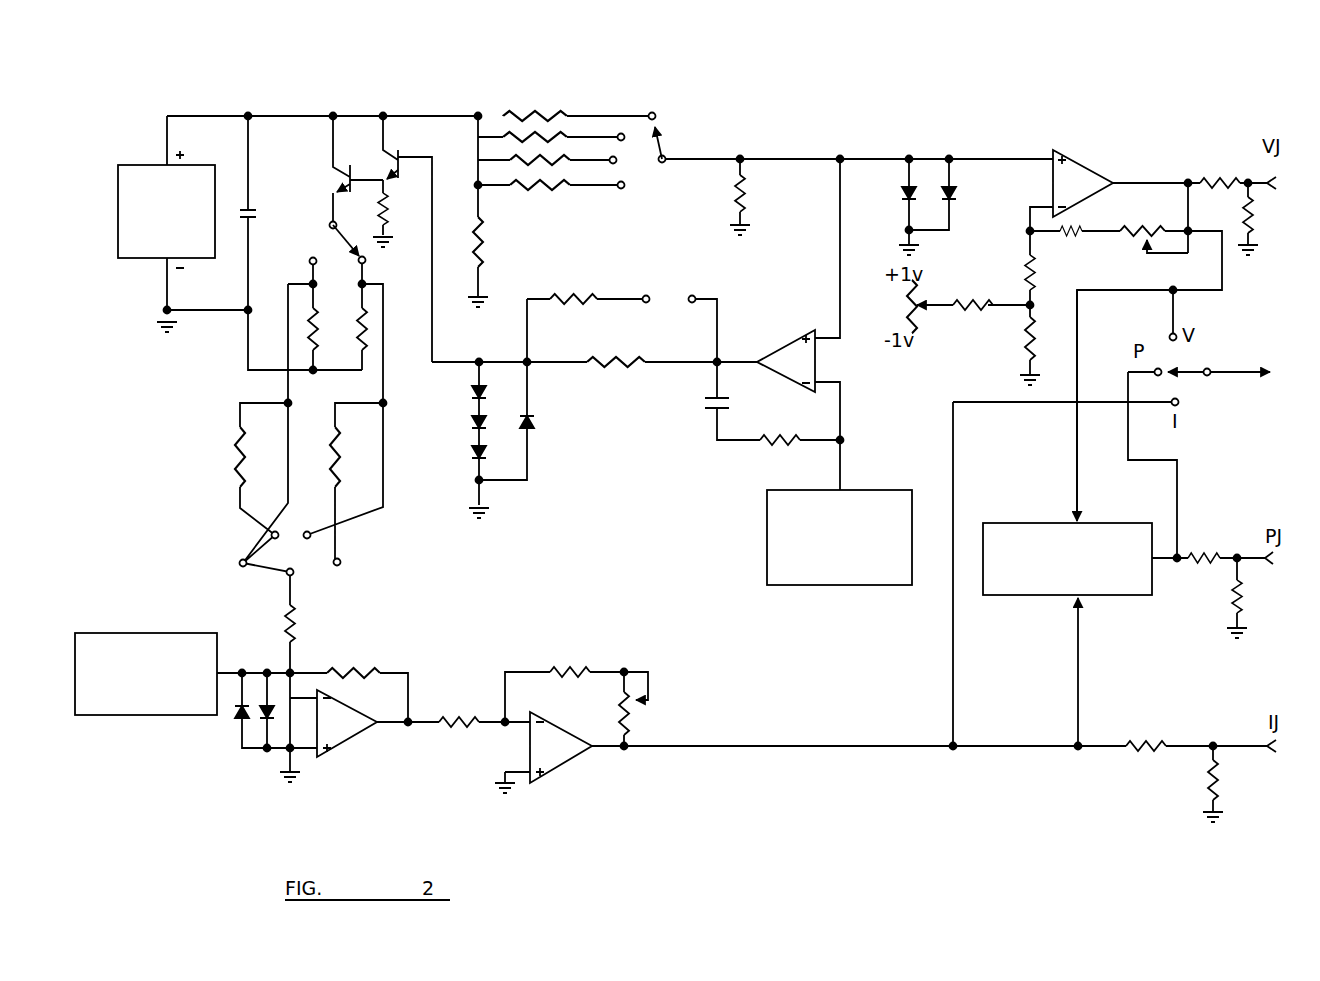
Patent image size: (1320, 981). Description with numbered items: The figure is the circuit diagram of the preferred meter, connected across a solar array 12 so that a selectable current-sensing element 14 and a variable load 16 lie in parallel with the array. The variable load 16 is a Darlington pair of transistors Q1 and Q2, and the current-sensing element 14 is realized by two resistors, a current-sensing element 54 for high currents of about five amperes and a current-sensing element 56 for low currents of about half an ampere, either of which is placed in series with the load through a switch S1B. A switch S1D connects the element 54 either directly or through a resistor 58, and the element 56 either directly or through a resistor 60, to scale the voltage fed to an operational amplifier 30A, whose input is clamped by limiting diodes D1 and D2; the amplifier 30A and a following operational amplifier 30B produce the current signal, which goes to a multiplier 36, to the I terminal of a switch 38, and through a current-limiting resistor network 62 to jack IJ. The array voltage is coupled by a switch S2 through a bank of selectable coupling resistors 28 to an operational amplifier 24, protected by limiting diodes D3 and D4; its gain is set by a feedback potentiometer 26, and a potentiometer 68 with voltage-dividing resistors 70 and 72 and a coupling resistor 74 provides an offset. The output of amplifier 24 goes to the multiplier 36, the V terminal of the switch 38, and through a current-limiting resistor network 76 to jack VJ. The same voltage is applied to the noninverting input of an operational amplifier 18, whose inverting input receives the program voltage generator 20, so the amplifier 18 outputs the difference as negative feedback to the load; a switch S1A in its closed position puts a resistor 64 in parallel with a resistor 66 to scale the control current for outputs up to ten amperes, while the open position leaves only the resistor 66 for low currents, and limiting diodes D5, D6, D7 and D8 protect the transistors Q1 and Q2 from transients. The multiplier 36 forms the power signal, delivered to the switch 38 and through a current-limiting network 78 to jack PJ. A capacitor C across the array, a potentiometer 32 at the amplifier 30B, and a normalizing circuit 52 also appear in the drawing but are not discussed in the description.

The solar array 12 is at (147, 172).
The selectable current-sensing element 14 is at (233, 340).
The variable load 16 is at (352, 104).
The operational amplifier 18 is at (791, 353).
The program voltage generator 20 is at (767, 545).
The operational amplifier 24 is at (1093, 168).
The feedback potentiometer 26 is at (1138, 247).
The bank of selectable coupling resistors 28 is at (532, 100).
The operational amplifier 30A is at (347, 736).
The operational amplifier 30B is at (565, 757).
The potentiometer 32 is at (642, 720).
The multiplier 36 is at (1008, 598).
The switch 38 is at (1192, 376).
The normalizing circuit 52 is at (152, 633).
The current-sensing element 54 is at (316, 318).
The current-sensing element 56 is at (358, 330).
The resistor 58 is at (234, 460).
The resistor 60 is at (345, 462).
The current-limiting resistor network 62 is at (1196, 762).
The resistor 64 is at (580, 300).
The resistor 66 is at (613, 365).
The potentiometer 68 is at (905, 302).
The voltage-dividing resistor 70 is at (968, 310).
The voltage-dividing resistor 72 is at (1022, 348).
The coupling resistor 74 is at (1026, 260).
The current-limiting resistor network 76 is at (1228, 165).
The current-limiting network 78 is at (1217, 582).
The capacitor C is at (258, 212).
The transistor Q1 is at (330, 183).
The transistor Q2 is at (377, 161).
The switch S2 is at (664, 134).
The switch S1A is at (683, 299).
The switch S1B is at (344, 238).
The switch S1D is at (251, 566).
The limiting diode D1 is at (237, 715).
The limiting diode D2 is at (262, 718).
The limiting diode D3 is at (920, 193).
The limiting diode D4 is at (958, 197).
The limiting diode D5 is at (533, 422).
The limiting diode D6 is at (472, 393).
The limiting diode D7 is at (472, 423).
The limiting diode D8 is at (472, 453).